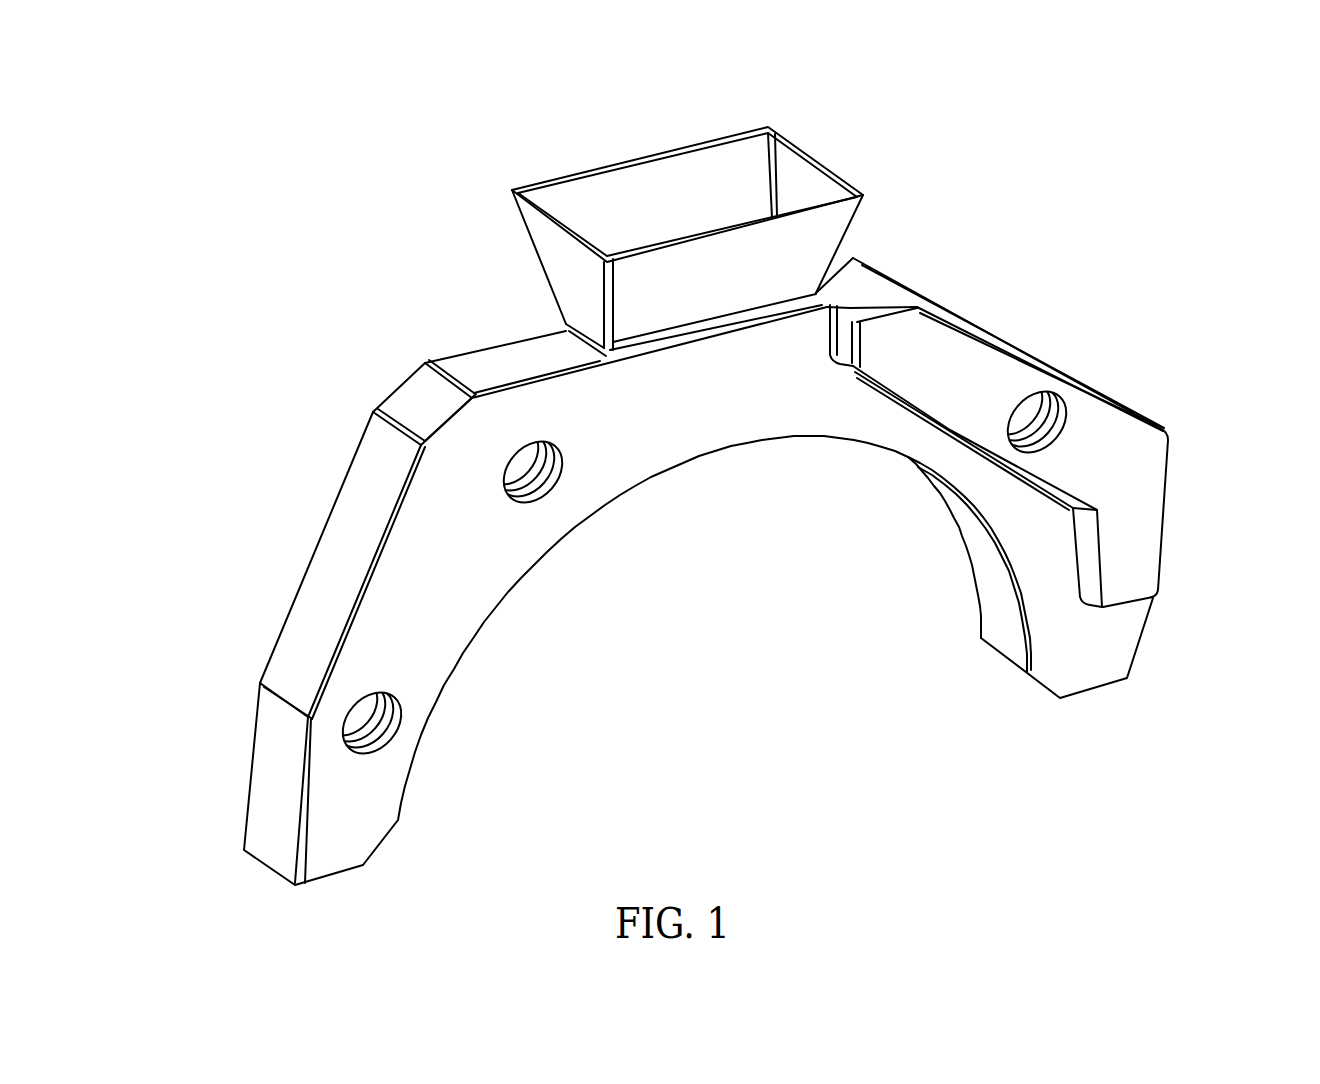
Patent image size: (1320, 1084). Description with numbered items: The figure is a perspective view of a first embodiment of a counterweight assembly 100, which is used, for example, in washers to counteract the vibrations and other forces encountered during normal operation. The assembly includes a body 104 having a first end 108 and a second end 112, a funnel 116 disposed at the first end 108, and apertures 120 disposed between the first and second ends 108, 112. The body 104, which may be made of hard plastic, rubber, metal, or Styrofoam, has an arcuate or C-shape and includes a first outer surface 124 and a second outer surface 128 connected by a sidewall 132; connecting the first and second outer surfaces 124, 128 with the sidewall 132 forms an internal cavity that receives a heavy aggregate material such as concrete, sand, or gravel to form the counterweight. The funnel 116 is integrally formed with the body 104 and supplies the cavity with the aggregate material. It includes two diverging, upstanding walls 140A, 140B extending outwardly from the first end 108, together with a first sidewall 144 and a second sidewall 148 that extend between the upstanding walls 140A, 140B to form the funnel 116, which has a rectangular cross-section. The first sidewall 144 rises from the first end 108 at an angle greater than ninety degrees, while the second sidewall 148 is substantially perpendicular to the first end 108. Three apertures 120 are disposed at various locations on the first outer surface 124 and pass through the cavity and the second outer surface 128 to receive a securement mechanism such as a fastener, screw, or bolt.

The counterweight assembly 100 is at (1154, 156).
The body 104 is at (257, 510).
The first end 108 is at (505, 352).
The second end 112 is at (330, 878).
The funnel 116 is at (683, 124).
The aperture 120 is at (545, 466).
The first outer surface 124 is at (1118, 648).
The second outer surface 128 is at (362, 440).
The sidewall 132 is at (297, 622).
The diverging upstanding wall 140A is at (600, 185).
The diverging upstanding wall 140B is at (718, 298).
The first sidewall 144 is at (553, 250).
The second sidewall 148 is at (805, 172).